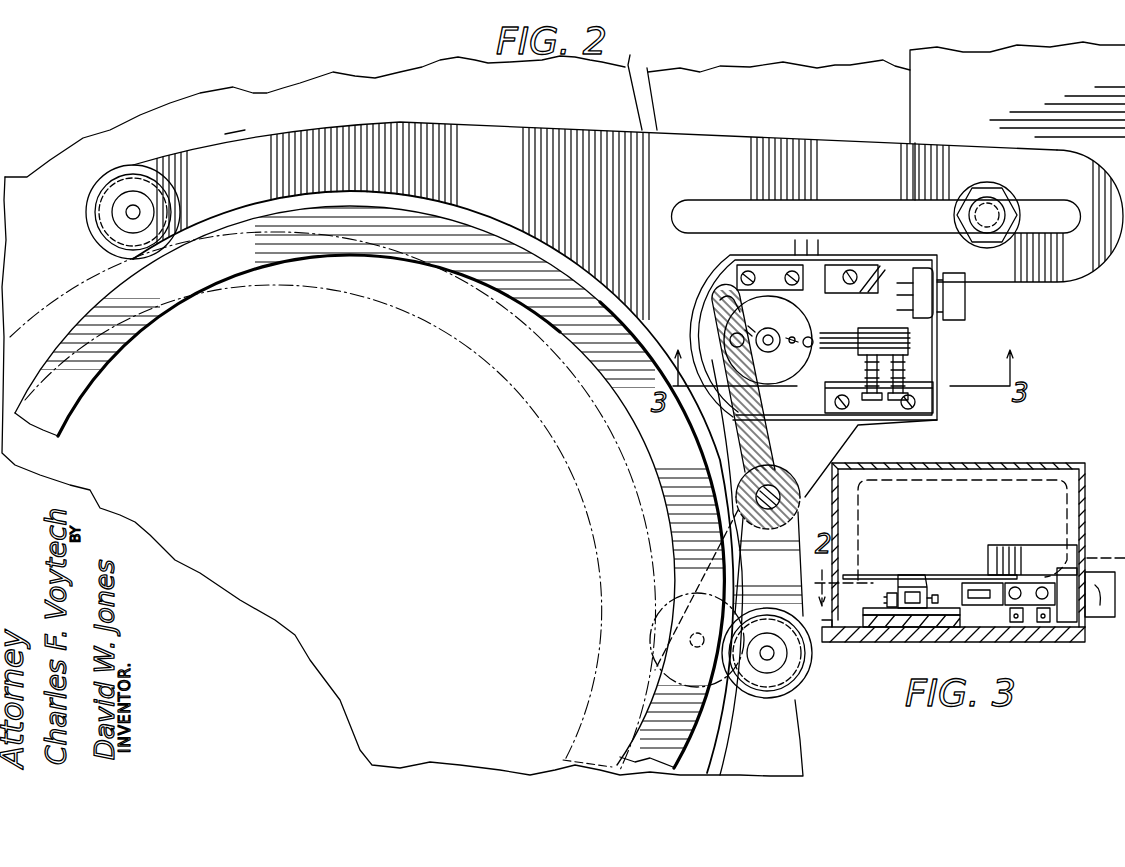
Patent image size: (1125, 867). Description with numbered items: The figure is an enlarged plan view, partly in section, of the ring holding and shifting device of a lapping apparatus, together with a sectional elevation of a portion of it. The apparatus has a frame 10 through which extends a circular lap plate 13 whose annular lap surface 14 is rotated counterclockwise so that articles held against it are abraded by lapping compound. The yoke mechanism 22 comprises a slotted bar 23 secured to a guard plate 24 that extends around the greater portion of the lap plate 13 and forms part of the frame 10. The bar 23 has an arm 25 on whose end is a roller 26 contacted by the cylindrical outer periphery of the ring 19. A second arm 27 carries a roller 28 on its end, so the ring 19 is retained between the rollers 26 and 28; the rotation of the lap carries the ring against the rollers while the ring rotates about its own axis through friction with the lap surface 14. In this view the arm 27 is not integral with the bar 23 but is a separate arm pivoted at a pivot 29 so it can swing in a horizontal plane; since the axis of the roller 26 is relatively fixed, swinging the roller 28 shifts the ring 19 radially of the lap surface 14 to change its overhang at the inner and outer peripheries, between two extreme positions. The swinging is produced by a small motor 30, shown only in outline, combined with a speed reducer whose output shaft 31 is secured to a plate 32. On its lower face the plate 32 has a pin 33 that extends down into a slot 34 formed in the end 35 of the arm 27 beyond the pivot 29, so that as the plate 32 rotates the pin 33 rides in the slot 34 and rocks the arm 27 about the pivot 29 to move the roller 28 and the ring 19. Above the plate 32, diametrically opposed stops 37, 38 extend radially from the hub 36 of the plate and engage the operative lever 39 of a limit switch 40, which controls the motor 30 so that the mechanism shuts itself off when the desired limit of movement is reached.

In FIG. 2, the frame 10 is at (812, 101).
In FIG. 2, the lap plate 13 is at (640, 64).
In FIG. 2, the lap surface 14 is at (442, 107).
In FIG. 2, the ring 19 is at (205, 275).
In FIG. 2, the yoke mechanism 22 is at (549, 124).
In FIG. 2, the slotted bar 23 is at (860, 143).
In FIG. 2, the guard plate 24 is at (1042, 100).
In FIG. 2, the arm 25 is at (237, 134).
In FIG. 2, the roller 26 is at (124, 166).
In FIG. 2, the second arm 27 is at (770, 600).
In FIG. 2, the roller 28 is at (805, 682).
In FIG. 2, the pivot 29 is at (780, 485).
In FIG. 3, the motor 30 is at (1050, 475).
In FIG. 2, the output shaft 31 is at (764, 345).
In FIG. 2, the plate 32 is at (806, 360).
In FIG. 3, the plate 32 is at (955, 615).
In FIG. 2, the pin 33 is at (730, 340).
In FIG. 3, the pin 33 is at (882, 618).
In FIG. 2, the slot 34 is at (722, 300).
In FIG. 2, the end of arm 35 is at (770, 438).
In FIG. 3, the end of arm 35 is at (862, 620).
In FIG. 2, the hub 36 is at (775, 329).
In FIG. 2, the stop 37 is at (790, 345).
In FIG. 3, the stop 37 is at (936, 594).
In FIG. 2, the stop 38 is at (752, 330).
In FIG. 3, the stop 38 is at (890, 592).
In FIG. 2, the operative lever 39 is at (810, 337).
In FIG. 3, the operative lever 39 is at (960, 585).
In FIG. 2, the limit switch 40 is at (960, 312).
In FIG. 3, the limit switch 40 is at (1035, 612).